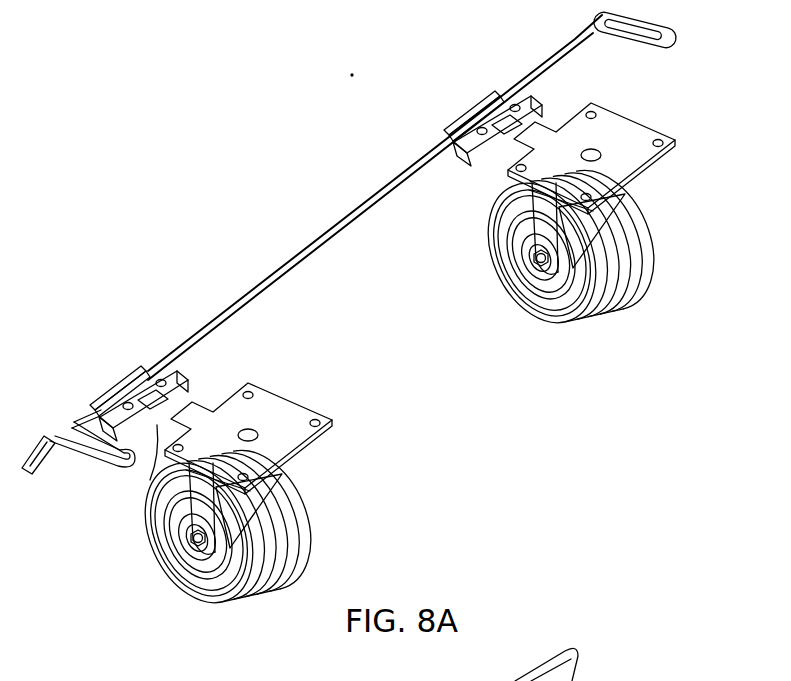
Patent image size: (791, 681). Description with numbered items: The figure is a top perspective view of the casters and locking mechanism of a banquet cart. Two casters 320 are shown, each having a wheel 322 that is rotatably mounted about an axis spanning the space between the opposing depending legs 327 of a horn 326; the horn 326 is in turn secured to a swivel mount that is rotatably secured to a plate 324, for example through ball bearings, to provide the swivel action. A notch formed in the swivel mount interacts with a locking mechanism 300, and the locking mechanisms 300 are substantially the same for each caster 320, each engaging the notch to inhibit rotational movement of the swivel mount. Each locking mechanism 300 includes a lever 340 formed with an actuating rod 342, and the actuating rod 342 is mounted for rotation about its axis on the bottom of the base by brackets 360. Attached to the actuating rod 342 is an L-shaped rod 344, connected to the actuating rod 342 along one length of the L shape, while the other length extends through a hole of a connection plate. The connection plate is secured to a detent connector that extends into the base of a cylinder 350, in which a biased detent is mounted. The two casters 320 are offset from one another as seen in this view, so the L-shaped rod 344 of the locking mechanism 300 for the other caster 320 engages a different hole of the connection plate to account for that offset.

The locking mechanism 300 is at (137, 353).
The caster 320 is at (222, 608).
The wheel 322 is at (288, 532).
The plate 324 is at (282, 408).
The horn 326 is at (192, 522).
The depending legs 327 is at (220, 507).
The lever 340 is at (677, 40).
The actuating rod 342 is at (296, 251).
The L-shaped rod 344 is at (481, 680).
The cylinder 350 is at (134, 468).
The brackets 360 is at (470, 143).